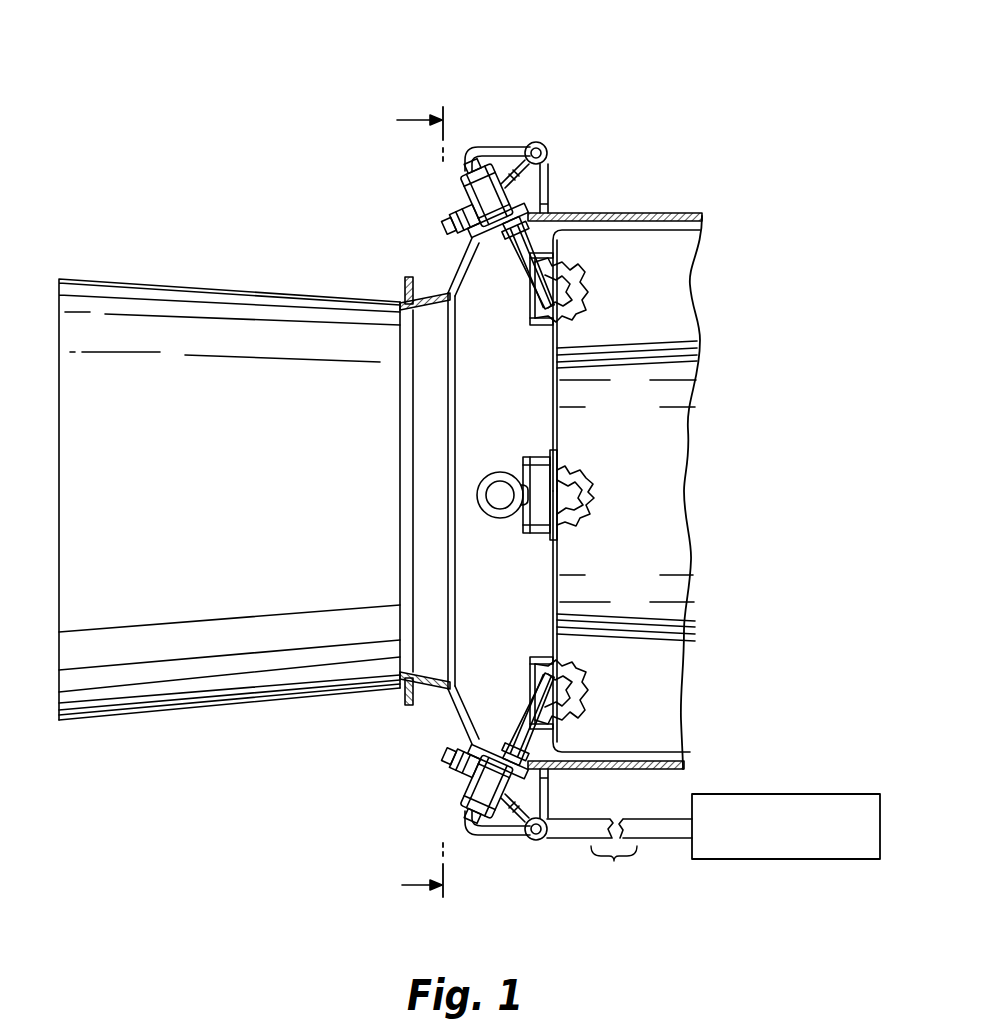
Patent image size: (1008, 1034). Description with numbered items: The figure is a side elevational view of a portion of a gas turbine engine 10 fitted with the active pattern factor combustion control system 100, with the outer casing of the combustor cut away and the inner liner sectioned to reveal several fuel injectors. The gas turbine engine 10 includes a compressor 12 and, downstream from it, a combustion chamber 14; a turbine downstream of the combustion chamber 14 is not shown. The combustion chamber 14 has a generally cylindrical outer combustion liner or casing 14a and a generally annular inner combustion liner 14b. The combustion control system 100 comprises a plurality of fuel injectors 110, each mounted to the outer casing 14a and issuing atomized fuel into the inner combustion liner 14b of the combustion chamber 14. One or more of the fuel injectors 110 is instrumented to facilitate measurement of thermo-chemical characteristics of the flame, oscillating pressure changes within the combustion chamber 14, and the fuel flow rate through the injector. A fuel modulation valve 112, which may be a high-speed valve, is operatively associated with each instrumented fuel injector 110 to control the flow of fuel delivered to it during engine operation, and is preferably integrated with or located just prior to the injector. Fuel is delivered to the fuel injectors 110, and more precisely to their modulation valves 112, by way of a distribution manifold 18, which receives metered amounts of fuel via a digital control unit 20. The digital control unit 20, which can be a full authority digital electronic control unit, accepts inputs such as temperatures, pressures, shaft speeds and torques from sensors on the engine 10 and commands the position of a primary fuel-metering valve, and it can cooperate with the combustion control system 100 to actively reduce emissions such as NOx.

The gas turbine engine 10 is at (312, 100).
The compressor 12 is at (205, 283).
The combustion chamber 14 is at (675, 497).
The outer combustion liner or casing 14a is at (643, 213).
The inner combustion liner 14b is at (623, 232).
The distribution manifold 18 is at (548, 182).
The digital control unit 20 is at (780, 793).
The combustion control system 100 is at (536, 132).
The fuel injector 110 is at (505, 242).
The fuel modulation valve 112 is at (445, 218).